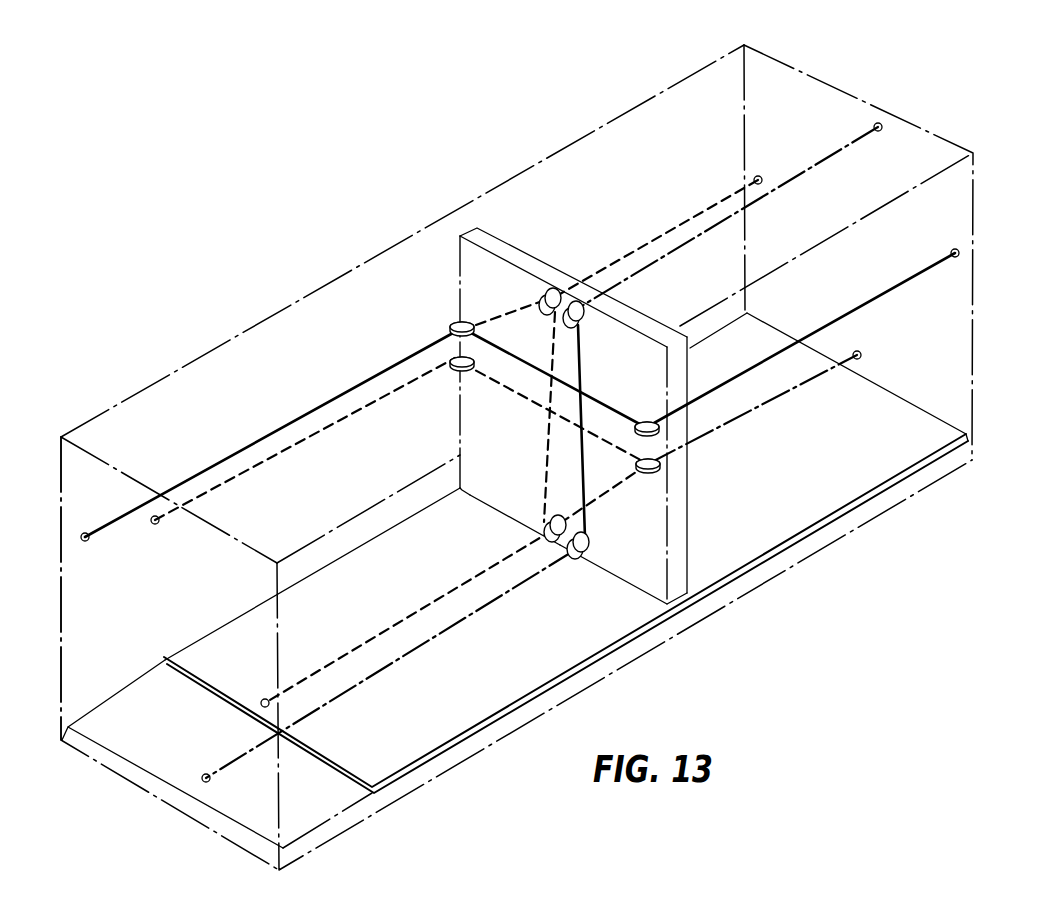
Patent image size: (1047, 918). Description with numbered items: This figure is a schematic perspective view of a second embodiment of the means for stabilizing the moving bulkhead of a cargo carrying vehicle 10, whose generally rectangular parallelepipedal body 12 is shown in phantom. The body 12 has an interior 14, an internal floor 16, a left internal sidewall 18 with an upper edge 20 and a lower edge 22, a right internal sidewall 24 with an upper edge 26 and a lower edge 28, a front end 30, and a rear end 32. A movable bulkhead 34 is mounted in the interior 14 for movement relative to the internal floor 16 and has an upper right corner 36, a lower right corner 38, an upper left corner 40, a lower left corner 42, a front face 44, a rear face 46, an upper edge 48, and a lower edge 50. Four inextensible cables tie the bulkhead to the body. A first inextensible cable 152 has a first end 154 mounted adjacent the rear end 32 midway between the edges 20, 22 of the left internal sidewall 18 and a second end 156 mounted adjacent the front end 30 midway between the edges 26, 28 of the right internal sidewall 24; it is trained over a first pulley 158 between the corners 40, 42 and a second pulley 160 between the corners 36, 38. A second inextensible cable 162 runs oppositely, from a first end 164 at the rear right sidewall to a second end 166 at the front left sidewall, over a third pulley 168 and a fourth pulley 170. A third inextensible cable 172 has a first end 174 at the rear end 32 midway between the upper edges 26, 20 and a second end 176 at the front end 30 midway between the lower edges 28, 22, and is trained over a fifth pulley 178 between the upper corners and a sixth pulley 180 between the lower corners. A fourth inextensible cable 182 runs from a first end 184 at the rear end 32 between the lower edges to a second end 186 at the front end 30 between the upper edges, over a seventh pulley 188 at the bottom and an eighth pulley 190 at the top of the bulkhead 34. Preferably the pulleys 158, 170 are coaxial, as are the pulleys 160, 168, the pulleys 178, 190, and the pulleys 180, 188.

The cargo carrying vehicle 10 is at (357, 250).
The body 12 is at (844, 439).
The interior 14 is at (510, 671).
The internal floor 16 is at (195, 675).
The left internal sidewall 18 is at (442, 704).
The upper edge 20 is at (346, 520).
The lower edge 22 is at (348, 815).
The right internal sidewall 24 is at (155, 603).
The upper edge 26 is at (103, 410).
The lower edge 28 is at (99, 711).
The front end 30 is at (105, 648).
The rear end 32 is at (797, 122).
The movable bulkhead 34 is at (527, 250).
The upper right corner 36 is at (462, 234).
The lower right corner 38 is at (458, 497).
The upper left corner 40 is at (692, 352).
The lower left corner 42 is at (690, 585).
The front face 44 is at (490, 503).
The rear face 46 is at (690, 513).
The upper edge 48 is at (550, 268).
The lower edge 50 is at (602, 572).
The first inextensible cable 152 is at (300, 415).
The first end 154 is at (955, 250).
The second end 156 is at (88, 530).
The first pulley 158 is at (646, 423).
The second pulley 160 is at (457, 320).
The second inextensible cable 162 is at (692, 218).
The first end 164 is at (755, 178).
The second end 166 is at (262, 698).
The third pulley 168 is at (457, 370).
The fourth pulley 170 is at (640, 464).
The third inextensible cable 172 is at (822, 158).
The first end 174 is at (880, 124).
The second end 176 is at (206, 773).
The fifth pulley 178 is at (580, 322).
The sixth pulley 180 is at (589, 545).
The fourth inextensible cable 182 is at (773, 412).
The first end 184 is at (862, 355).
The second end 186 is at (155, 525).
The seventh pulley 188 is at (548, 520).
The eighth pulley 190 is at (543, 298).